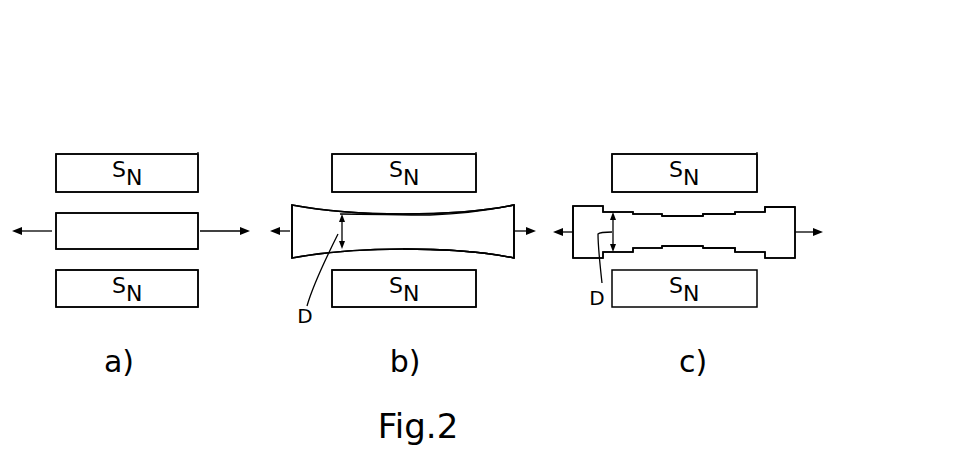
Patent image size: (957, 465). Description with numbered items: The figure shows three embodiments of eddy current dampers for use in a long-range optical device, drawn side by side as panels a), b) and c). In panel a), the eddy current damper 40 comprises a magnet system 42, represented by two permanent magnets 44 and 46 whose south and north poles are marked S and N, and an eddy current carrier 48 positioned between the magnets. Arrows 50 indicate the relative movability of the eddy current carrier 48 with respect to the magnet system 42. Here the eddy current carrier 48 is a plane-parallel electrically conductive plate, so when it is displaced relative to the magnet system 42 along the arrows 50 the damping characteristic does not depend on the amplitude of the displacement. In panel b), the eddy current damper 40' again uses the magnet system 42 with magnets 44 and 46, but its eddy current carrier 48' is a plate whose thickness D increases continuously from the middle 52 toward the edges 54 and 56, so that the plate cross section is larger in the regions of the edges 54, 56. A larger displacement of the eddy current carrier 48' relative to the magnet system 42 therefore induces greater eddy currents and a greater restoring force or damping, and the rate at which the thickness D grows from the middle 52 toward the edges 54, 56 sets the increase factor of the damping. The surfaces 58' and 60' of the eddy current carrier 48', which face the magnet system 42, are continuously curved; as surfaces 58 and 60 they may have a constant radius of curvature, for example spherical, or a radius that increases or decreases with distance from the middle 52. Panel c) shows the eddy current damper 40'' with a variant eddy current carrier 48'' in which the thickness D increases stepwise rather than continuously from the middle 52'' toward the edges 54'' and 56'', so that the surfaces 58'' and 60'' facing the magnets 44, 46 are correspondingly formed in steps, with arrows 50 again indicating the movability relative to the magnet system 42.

The eddy current damper 40 is at (127, 163).
The eddy current damper 40' is at (403, 163).
The eddy current damper 40'' is at (684, 163).
The magnet system 42 is at (200, 146).
The permanent magnet 44 is at (72, 163).
The permanent magnet 46 is at (78, 297).
The eddy current carrier 48 is at (103, 209).
The eddy current carrier 48' is at (379, 266).
The eddy current carrier 48'' is at (707, 198).
The arrows 50 is at (40, 235).
The middle 52 is at (385, 166).
The middle 52'' is at (672, 174).
The edge 54 is at (304, 204).
The edge 54'' is at (577, 277).
The edge 56 is at (505, 277).
The edge 56'' is at (794, 165).
The surface 58 is at (174, 157).
The surface 58' is at (472, 158).
The surface 58'' is at (725, 159).
The surface 60 is at (164, 298).
The surface 60' is at (458, 298).
The surface 60'' is at (733, 298).